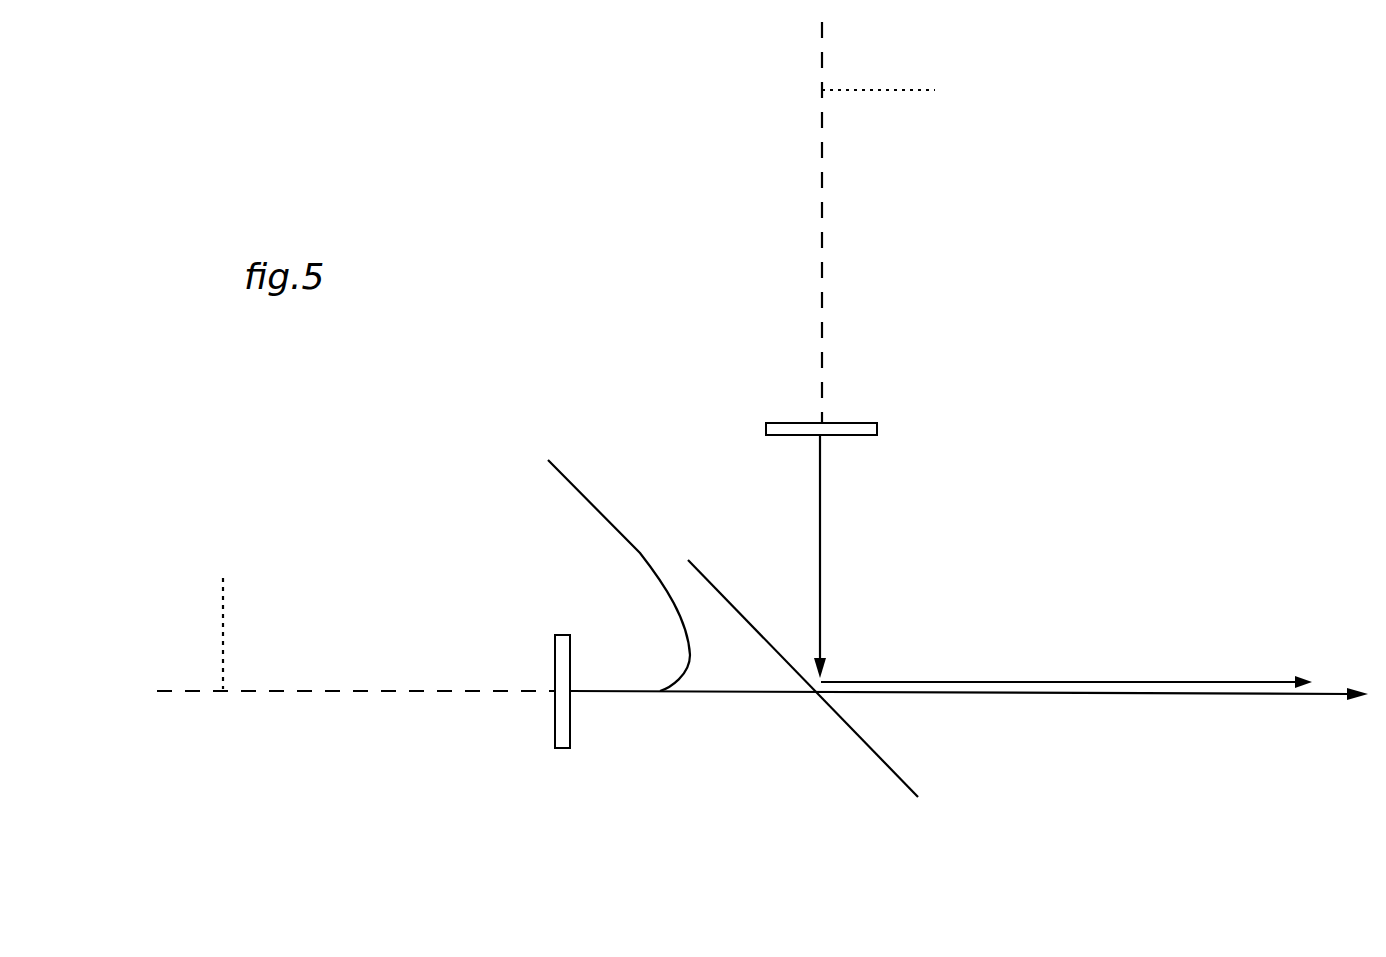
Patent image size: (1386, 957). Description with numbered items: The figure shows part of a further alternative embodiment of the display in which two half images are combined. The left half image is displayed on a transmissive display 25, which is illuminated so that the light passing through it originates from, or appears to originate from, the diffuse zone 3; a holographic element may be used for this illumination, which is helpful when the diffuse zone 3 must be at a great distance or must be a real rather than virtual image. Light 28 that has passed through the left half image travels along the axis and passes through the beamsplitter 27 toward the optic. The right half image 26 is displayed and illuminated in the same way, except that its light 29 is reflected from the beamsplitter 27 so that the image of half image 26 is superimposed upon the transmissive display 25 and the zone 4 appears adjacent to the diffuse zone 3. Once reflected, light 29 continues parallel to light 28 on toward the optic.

The diffuse zone 3 is at (225, 627).
The zone 4 is at (880, 90).
The transmissive display 25 is at (555, 747).
The half image 26 is at (877, 435).
The beamsplitter 27 is at (858, 740).
The light 28 is at (606, 562).
The light 29 is at (1065, 681).